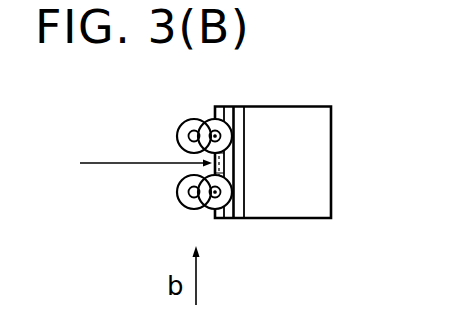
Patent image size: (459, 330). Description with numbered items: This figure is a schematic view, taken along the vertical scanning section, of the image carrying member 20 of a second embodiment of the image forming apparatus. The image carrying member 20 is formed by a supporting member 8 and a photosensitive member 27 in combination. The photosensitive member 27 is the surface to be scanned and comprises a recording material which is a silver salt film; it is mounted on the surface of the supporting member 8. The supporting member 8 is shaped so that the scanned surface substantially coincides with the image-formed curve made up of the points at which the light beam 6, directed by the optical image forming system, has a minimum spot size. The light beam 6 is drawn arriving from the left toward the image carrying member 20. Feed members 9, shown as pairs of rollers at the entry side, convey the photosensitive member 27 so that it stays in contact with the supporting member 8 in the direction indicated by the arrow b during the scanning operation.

The light beam 6 is at (123, 162).
The supporting member 8 is at (320, 172).
The feed members 9 is at (196, 118).
The image carrying member 20 is at (287, 97).
The photosensitive member 27 is at (222, 220).